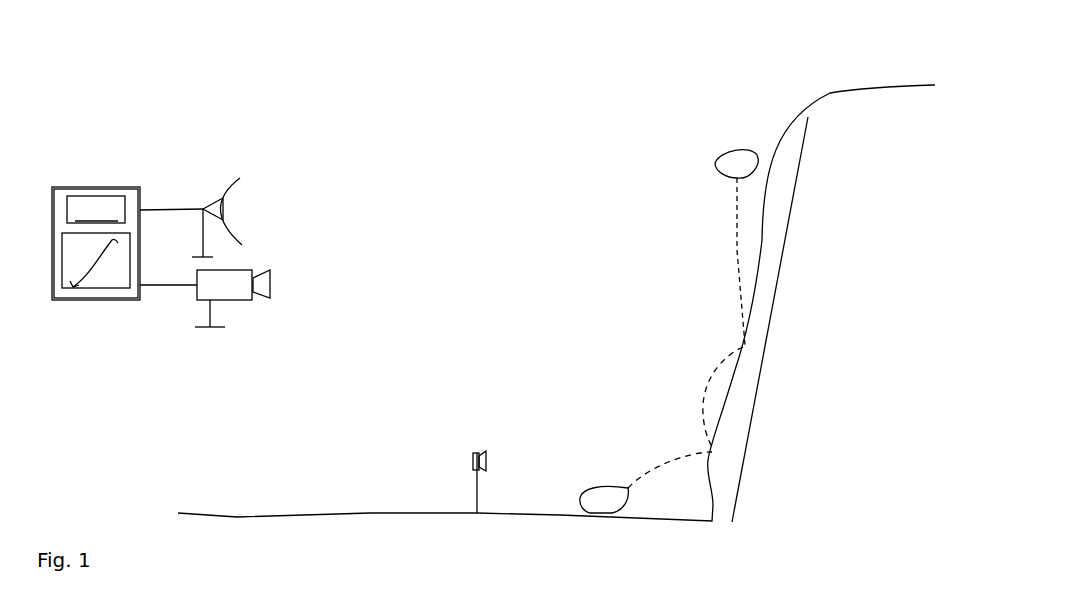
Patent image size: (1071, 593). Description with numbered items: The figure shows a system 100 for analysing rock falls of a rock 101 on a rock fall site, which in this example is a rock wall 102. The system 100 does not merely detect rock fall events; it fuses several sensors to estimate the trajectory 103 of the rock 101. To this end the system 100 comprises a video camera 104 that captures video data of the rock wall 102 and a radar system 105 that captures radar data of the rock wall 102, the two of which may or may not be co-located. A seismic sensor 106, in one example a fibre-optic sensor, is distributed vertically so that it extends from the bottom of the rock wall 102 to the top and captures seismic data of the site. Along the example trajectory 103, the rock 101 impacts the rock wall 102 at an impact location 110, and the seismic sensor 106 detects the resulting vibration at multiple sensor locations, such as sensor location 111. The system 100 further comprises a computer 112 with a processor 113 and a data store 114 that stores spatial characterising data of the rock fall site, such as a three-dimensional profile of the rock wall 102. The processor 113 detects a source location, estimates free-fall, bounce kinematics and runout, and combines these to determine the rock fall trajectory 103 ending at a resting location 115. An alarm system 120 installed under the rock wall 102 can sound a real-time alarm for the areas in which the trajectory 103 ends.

The system 100 is at (140, 53).
The rock 101 is at (715, 163).
The rock wall 102 is at (735, 107).
The trajectory 103 is at (737, 255).
The video camera 104 is at (239, 300).
The radar system 105 is at (242, 177).
The seismic sensor 106 is at (787, 230).
The impact location 110 is at (735, 335).
The sensor location 111 is at (774, 362).
The computer 112 is at (102, 187).
The processor 113 is at (96, 209).
The data store 114 is at (95, 289).
The resting location 115 is at (600, 488).
The alarm system 120 is at (472, 447).